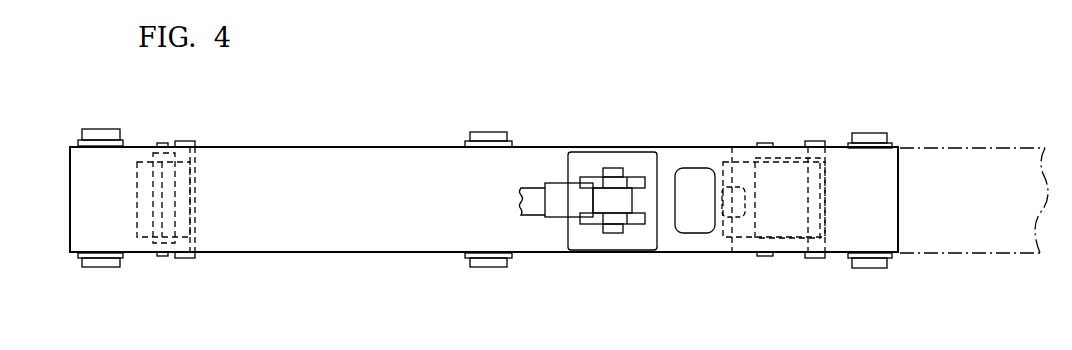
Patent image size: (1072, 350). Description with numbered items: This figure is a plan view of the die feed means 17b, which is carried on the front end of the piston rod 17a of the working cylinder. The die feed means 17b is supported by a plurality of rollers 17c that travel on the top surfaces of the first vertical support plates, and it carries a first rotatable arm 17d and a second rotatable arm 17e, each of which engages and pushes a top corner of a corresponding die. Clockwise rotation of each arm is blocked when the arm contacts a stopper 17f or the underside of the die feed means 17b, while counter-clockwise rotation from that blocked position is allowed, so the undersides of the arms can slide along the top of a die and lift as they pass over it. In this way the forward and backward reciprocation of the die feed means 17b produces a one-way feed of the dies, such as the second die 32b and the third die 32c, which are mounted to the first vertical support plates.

The piston rod 17a is at (517, 196).
The die feed means 17b is at (398, 126).
The rollers 17c is at (111, 128).
The first rotatable arm 17d is at (810, 213).
The second rotatable arm 17e is at (180, 197).
The stopper 17f is at (737, 188).
The second die 32b is at (985, 255).
The third die 32c is at (313, 254).